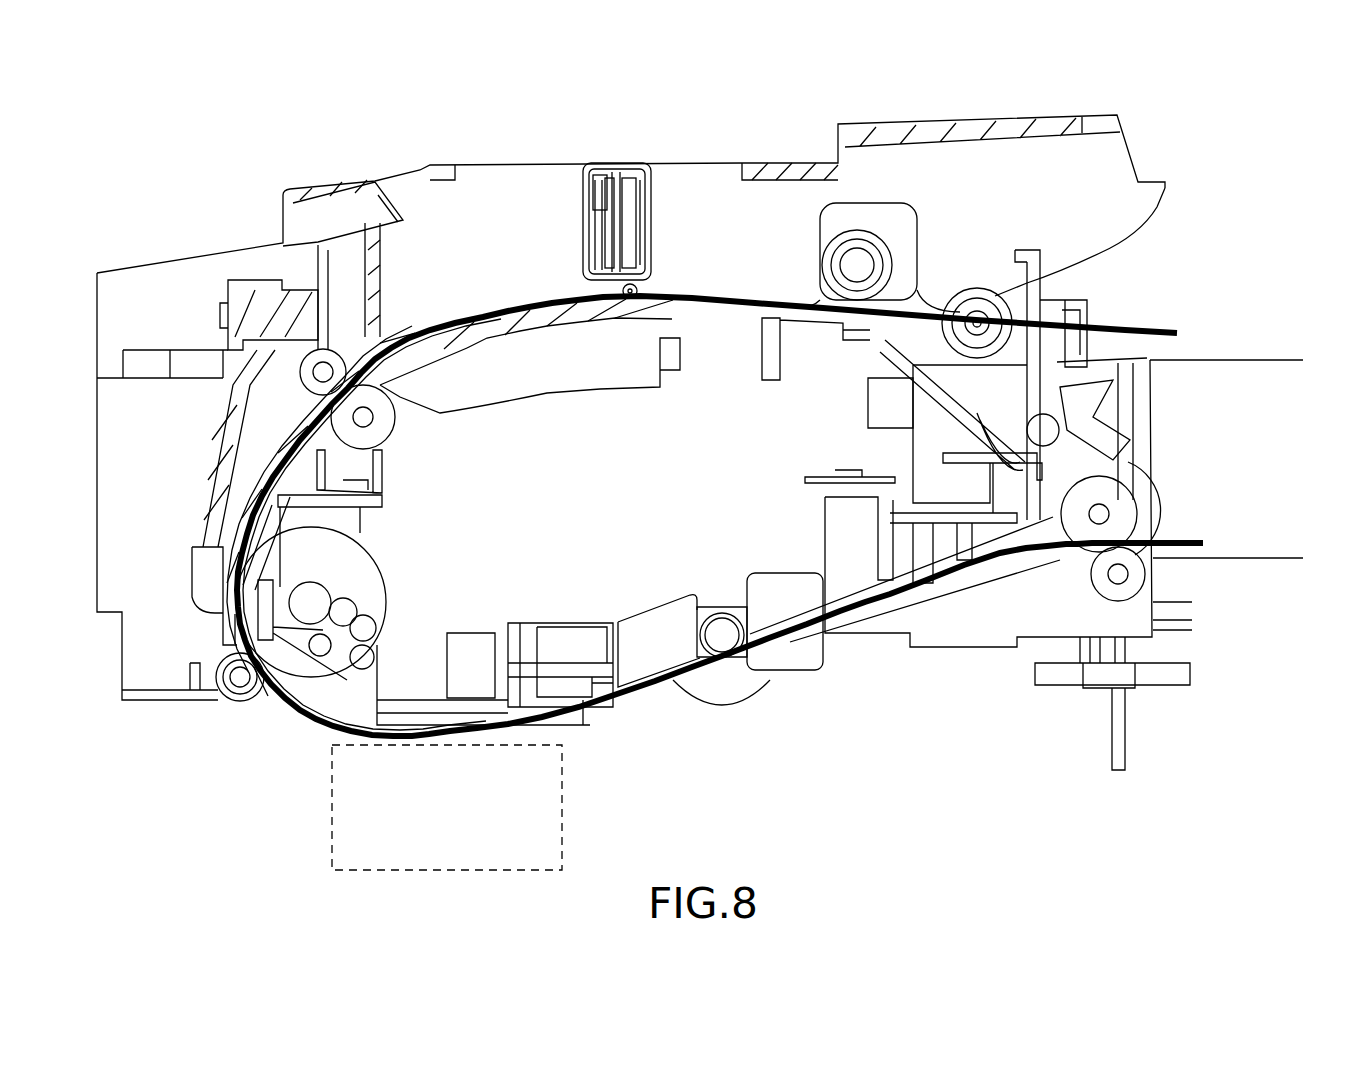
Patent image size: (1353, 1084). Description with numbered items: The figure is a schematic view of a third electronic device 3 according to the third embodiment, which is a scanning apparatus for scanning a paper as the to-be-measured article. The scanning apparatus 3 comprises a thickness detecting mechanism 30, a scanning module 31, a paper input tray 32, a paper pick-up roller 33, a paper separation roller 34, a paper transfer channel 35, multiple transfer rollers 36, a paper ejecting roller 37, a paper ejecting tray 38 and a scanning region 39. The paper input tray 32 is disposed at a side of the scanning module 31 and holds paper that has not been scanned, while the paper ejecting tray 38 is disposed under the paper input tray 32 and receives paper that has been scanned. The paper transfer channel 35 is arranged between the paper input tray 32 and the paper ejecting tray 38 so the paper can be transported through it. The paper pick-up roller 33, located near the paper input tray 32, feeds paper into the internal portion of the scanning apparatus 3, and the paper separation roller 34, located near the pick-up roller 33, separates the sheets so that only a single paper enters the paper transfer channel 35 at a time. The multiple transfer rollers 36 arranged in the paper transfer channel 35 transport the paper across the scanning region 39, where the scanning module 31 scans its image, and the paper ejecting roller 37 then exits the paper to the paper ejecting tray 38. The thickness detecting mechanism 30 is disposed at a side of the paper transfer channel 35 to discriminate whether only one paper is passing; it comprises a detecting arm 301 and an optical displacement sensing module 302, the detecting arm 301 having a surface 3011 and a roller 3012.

The third electronic device 3 is at (115, 164).
The thickness detecting mechanism 30 is at (645, 172).
The detecting arm 301 is at (630, 227).
The optical displacement sensing module 302 is at (608, 156).
The surface 3011 is at (610, 227).
The roller 3012 is at (683, 313).
The scanning module 31 is at (540, 838).
The paper input tray 32 is at (1237, 358).
The paper pick-up roller 33 is at (977, 320).
The paper separation roller 34 is at (857, 263).
The paper transfer channel 35 is at (518, 303).
The transfer rollers 36 is at (323, 367).
The paper ejecting roller 37 is at (1118, 515).
The paper ejecting tray 38 is at (1237, 557).
The scanning region 39 is at (455, 697).